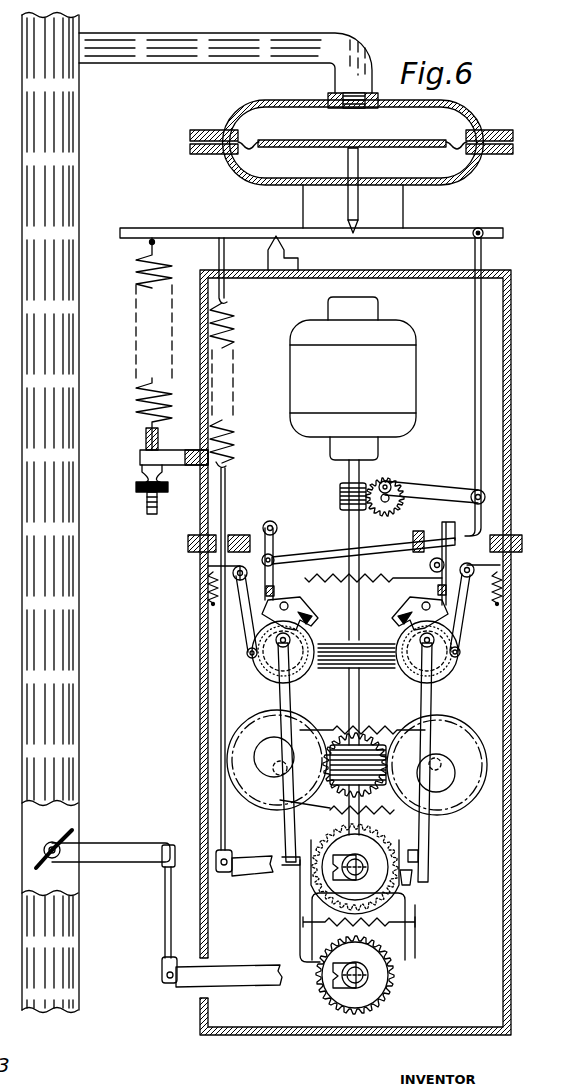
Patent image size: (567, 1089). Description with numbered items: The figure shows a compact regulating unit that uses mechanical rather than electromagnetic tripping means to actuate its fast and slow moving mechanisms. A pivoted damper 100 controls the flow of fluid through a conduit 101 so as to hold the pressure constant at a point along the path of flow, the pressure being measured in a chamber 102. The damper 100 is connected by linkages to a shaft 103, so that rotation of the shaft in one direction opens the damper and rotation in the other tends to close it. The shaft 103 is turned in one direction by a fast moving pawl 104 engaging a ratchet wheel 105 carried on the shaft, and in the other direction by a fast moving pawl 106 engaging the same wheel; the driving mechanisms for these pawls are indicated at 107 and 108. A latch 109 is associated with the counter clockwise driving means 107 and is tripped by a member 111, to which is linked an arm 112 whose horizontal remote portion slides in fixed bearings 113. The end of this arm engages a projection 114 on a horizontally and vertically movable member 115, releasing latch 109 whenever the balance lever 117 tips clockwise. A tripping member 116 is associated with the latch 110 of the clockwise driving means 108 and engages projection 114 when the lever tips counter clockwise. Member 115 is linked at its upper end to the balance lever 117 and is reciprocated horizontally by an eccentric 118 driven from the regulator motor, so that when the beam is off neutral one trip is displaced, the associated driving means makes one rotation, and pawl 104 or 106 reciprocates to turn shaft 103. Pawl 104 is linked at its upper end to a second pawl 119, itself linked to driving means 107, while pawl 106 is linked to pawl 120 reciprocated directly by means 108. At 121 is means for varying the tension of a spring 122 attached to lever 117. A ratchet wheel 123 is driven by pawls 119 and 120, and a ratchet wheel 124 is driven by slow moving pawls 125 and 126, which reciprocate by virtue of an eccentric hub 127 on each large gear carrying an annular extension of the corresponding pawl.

The pivoted damper 100 is at (62, 842).
The conduit 101 is at (80, 566).
The chamber 102 is at (351, 163).
The shaft 103 is at (370, 976).
The fast moving pawl 104 is at (300, 916).
The ratchet wheel 105 is at (386, 990).
The fast moving pawl 106 is at (416, 906).
The counter clockwise fast moving driving means 107 is at (270, 661).
The clockwise fast moving driving means 108 is at (450, 678).
The latch 109 is at (296, 612).
The latch 110 is at (412, 612).
The tripping member 111 is at (262, 533).
The arm 112 is at (305, 548).
The fixed bearings 113 is at (412, 540).
The projection 114 is at (500, 535).
The horizontally and vertically movable member 115 is at (475, 450).
The tripping member 116 is at (442, 522).
The balance lever 117 is at (430, 228).
The eccentric 118 is at (415, 486).
The second pawl 119 is at (292, 700).
The pawl 120 is at (420, 700).
The means for varying the tension of spring 121 is at (355, 867).
The spring 122 is at (233, 374).
The ratchet wheel 123 is at (400, 889).
The ratchet wheel 124 is at (415, 866).
The slow moving pawl 125 is at (285, 834).
The slow moving pawl 126 is at (436, 819).
The eccentric hub 127 is at (268, 756).